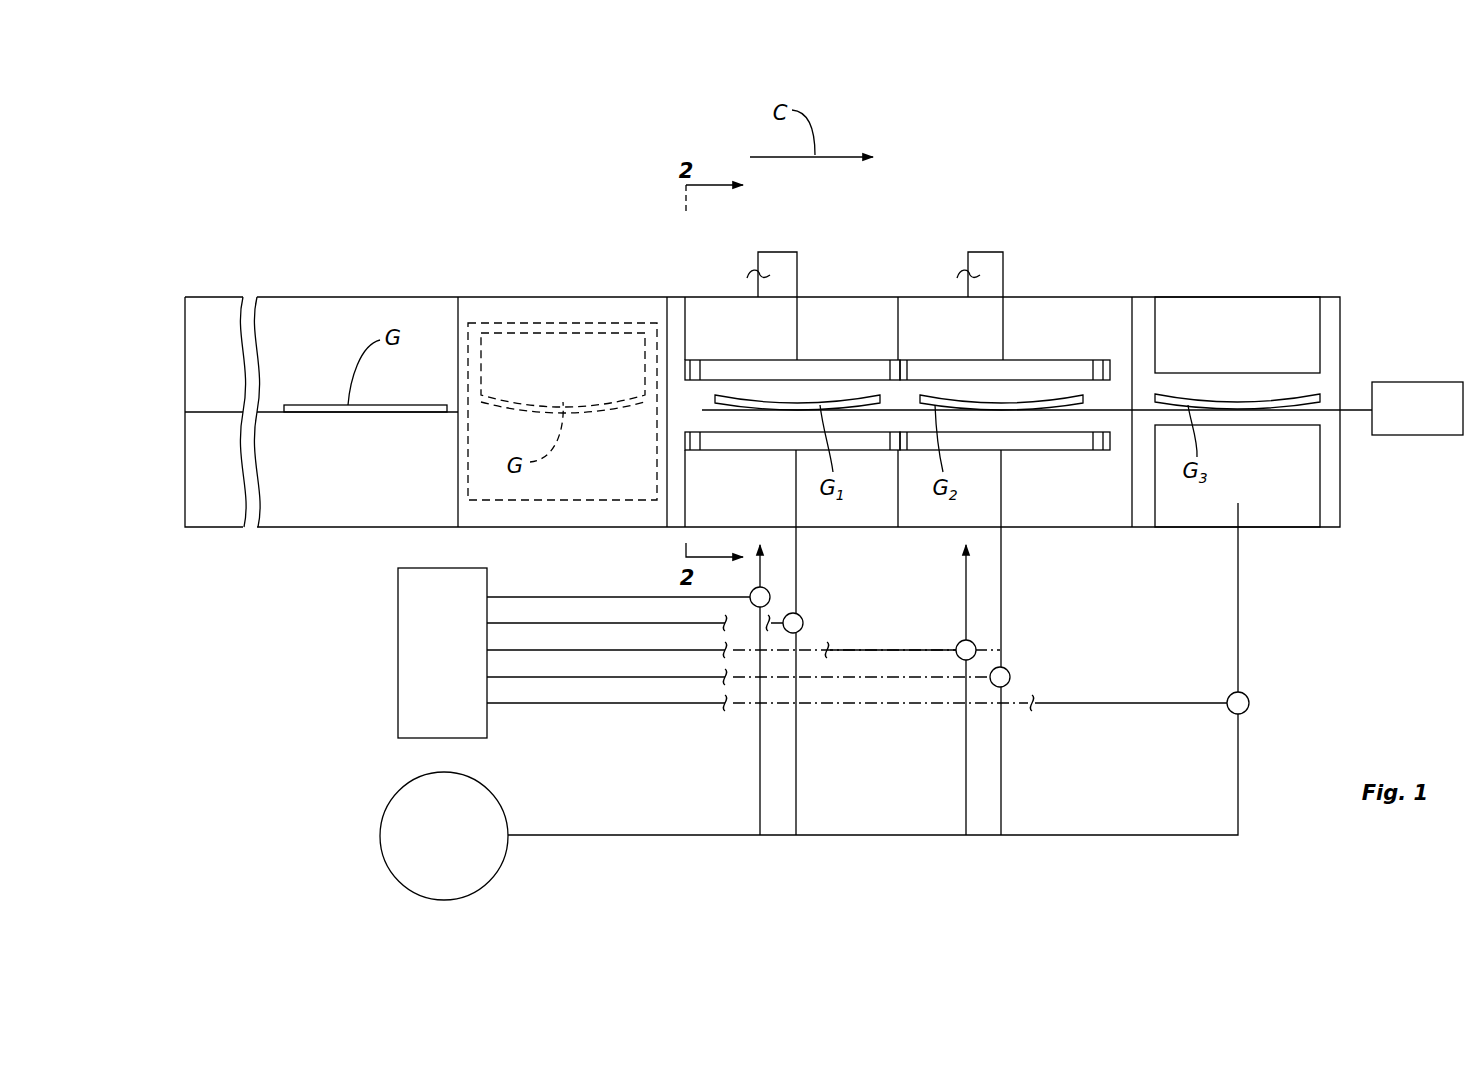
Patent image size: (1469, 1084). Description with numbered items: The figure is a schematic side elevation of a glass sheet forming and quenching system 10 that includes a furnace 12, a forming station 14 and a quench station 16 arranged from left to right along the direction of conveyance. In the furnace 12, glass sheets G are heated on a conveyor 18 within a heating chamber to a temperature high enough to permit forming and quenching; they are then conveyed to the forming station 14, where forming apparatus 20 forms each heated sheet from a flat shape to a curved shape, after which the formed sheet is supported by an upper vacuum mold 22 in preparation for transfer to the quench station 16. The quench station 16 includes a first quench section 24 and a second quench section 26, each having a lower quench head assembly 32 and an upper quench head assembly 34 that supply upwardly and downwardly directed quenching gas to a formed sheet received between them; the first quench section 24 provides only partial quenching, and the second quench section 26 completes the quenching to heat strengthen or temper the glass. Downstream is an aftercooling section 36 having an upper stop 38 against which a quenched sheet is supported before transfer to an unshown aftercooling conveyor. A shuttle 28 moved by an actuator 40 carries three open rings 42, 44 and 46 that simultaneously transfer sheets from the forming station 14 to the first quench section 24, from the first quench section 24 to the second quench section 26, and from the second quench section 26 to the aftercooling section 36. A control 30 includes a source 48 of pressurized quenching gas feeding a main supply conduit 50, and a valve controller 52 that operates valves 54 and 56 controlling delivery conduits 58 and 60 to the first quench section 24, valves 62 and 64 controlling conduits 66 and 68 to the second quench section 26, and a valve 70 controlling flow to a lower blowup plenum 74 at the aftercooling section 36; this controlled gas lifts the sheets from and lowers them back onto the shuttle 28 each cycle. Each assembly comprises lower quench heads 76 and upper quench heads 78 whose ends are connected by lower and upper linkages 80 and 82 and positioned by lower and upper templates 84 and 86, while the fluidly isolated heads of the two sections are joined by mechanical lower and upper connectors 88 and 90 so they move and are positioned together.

The glass sheet forming and quenching system 10 is at (920, 205).
The furnace 12 is at (239, 288).
The forming station 14 is at (562, 248).
The quench station 16 is at (1058, 270).
The conveyor 18 is at (213, 410).
The forming apparatus 20 is at (543, 323).
The upper vacuum mold 22 is at (578, 357).
The first quench section 24 is at (837, 295).
The second quench section 26 is at (1082, 290).
The shuttle 28 is at (1362, 372).
The control 30 is at (364, 768).
The lower quench head assembly 32 is at (749, 440).
The upper quench head assembly 34 is at (843, 370).
The aftercooling section 36 is at (1256, 310).
The upper stop 38 is at (1222, 376).
The actuator 40 is at (1423, 437).
The open ring 42 is at (725, 405).
The open ring 44 is at (960, 405).
The open ring 46 is at (1288, 406).
The source of pressurized quenching gas 48 is at (470, 877).
The main supply conduit 50 is at (848, 836).
The valve controller 52 is at (392, 655).
The valve 54 is at (800, 616).
The valve 56 is at (766, 590).
The delivery conduit 58 is at (794, 802).
The delivery conduit 60 is at (758, 760).
The valve 62 is at (1007, 670).
The valve 64 is at (973, 643).
The conduit 66 is at (1000, 803).
The conduit 68 is at (964, 762).
The valve 70 is at (1249, 700).
The lower blowup plenum 74 is at (1313, 472).
The lower quench head 76 is at (860, 441).
The upper quench head 78 is at (748, 368).
The lower linkage 80 is at (697, 451).
The upper linkage 82 is at (696, 362).
The lower template 84 is at (685, 440).
The upper template 86 is at (687, 362).
The lower connector 88 is at (903, 437).
The upper connector 90 is at (903, 362).